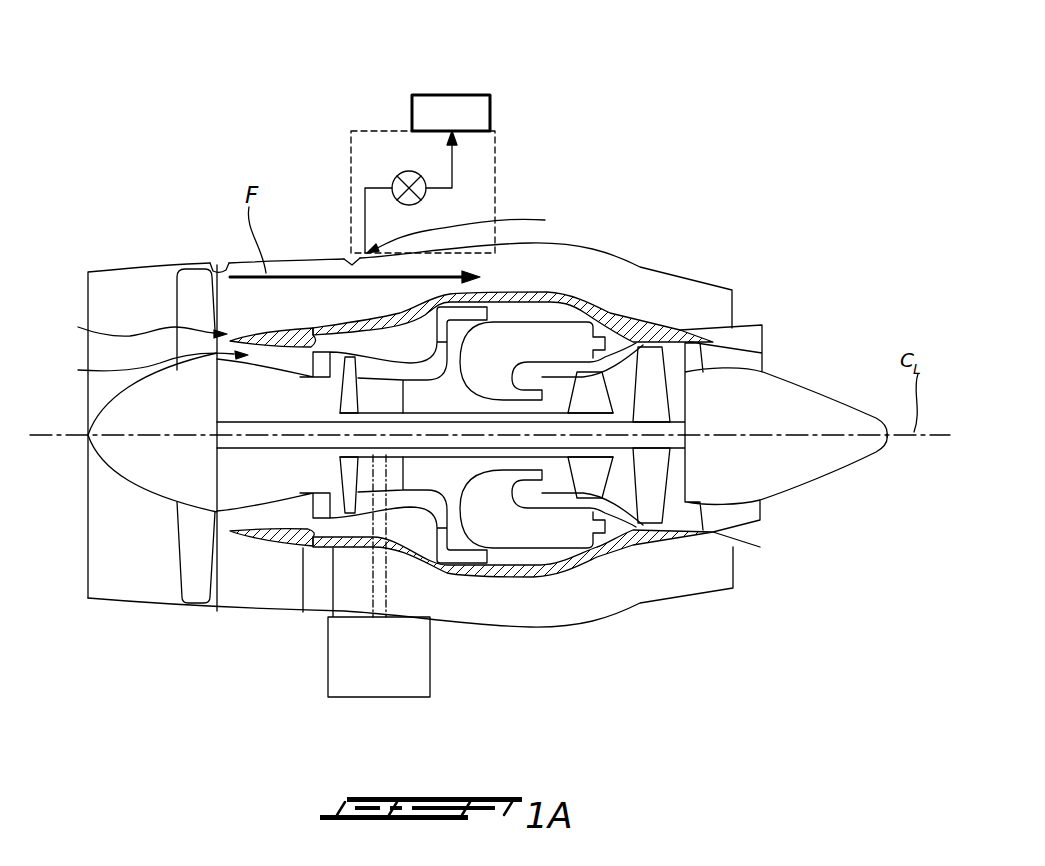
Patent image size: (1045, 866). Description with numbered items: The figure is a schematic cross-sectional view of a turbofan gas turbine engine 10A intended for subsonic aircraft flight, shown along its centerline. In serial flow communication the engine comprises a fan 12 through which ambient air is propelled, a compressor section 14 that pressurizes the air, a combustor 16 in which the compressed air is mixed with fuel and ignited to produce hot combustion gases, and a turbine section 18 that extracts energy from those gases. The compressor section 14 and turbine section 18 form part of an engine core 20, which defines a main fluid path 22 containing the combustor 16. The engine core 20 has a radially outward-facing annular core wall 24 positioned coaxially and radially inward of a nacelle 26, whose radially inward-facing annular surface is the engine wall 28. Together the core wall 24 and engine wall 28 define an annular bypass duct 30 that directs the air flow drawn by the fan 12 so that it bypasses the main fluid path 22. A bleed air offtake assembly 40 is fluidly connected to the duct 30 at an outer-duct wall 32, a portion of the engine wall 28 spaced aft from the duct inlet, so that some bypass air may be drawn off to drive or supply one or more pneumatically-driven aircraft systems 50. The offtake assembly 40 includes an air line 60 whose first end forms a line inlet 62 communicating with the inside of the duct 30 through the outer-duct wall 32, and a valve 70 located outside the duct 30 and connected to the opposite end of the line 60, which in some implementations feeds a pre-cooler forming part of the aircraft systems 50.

The gas turbine engine 10A is at (679, 168).
The fan 12 is at (153, 463).
The compressor section 14 is at (368, 538).
The combustor 16 is at (540, 527).
The turbine section 18 is at (622, 483).
The engine core 20 is at (137, 328).
The main fluid path 22 is at (148, 368).
The core wall 24 is at (257, 328).
The nacelle 26 is at (79, 247).
The engine wall 28 is at (211, 263).
The bypass duct 30 is at (390, 313).
The outer-duct wall 32 is at (351, 263).
The bleed air offtake assembly 40 is at (497, 172).
The pneumatically-driven aircraft systems 50 is at (448, 105).
The air line 60 is at (363, 213).
The line inlet 62 is at (473, 228).
The valve 70 is at (402, 172).